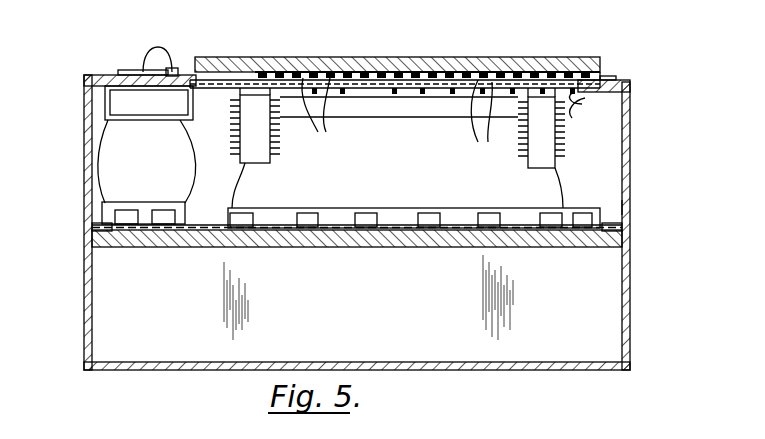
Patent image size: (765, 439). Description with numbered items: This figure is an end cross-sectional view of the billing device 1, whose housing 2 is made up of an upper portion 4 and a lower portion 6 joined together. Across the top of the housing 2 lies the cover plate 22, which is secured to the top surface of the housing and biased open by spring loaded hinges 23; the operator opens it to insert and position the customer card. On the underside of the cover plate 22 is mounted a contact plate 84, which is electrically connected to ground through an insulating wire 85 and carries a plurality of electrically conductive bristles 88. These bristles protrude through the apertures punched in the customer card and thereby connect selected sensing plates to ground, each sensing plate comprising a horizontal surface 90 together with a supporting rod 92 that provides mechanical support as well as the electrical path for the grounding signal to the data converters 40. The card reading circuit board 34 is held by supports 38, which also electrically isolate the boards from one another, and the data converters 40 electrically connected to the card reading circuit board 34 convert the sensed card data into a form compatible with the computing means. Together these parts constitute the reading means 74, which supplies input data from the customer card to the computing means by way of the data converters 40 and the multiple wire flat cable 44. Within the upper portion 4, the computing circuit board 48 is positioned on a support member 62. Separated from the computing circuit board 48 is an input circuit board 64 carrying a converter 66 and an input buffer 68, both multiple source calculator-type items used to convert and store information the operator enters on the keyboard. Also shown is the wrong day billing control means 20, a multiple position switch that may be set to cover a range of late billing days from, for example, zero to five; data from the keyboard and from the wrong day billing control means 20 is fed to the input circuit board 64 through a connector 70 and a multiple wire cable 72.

The billing device 1 is at (644, 136).
The housing 2 is at (635, 215).
The upper portion 4 is at (87, 156).
The lower portion 6 is at (84, 287).
The wrong day billing control means 20 is at (155, 63).
The cover plate 22 is at (490, 70).
The spring loaded hinges 23 is at (612, 76).
The card reading circuit board 34 is at (220, 73).
The supports 38 is at (576, 104).
The data converters 40 is at (258, 158).
The multiple wire flat cable 44 is at (558, 196).
The computing circuit board 48 is at (342, 236).
The support member 62 is at (104, 235).
The input circuit board 64 is at (143, 235).
The converter 66 is at (130, 212).
The input buffer 68 is at (170, 214).
The connector 70 is at (118, 96).
The multiple wire cable 72 is at (163, 148).
The reading means 74 is at (386, 70).
The contact plate 84 is at (270, 72).
The insulating wire 85 is at (546, 78).
The electrically conductive bristles 88 is at (330, 72).
The horizontal surface 90 is at (399, 120).
The supporting rod 92 is at (355, 72).